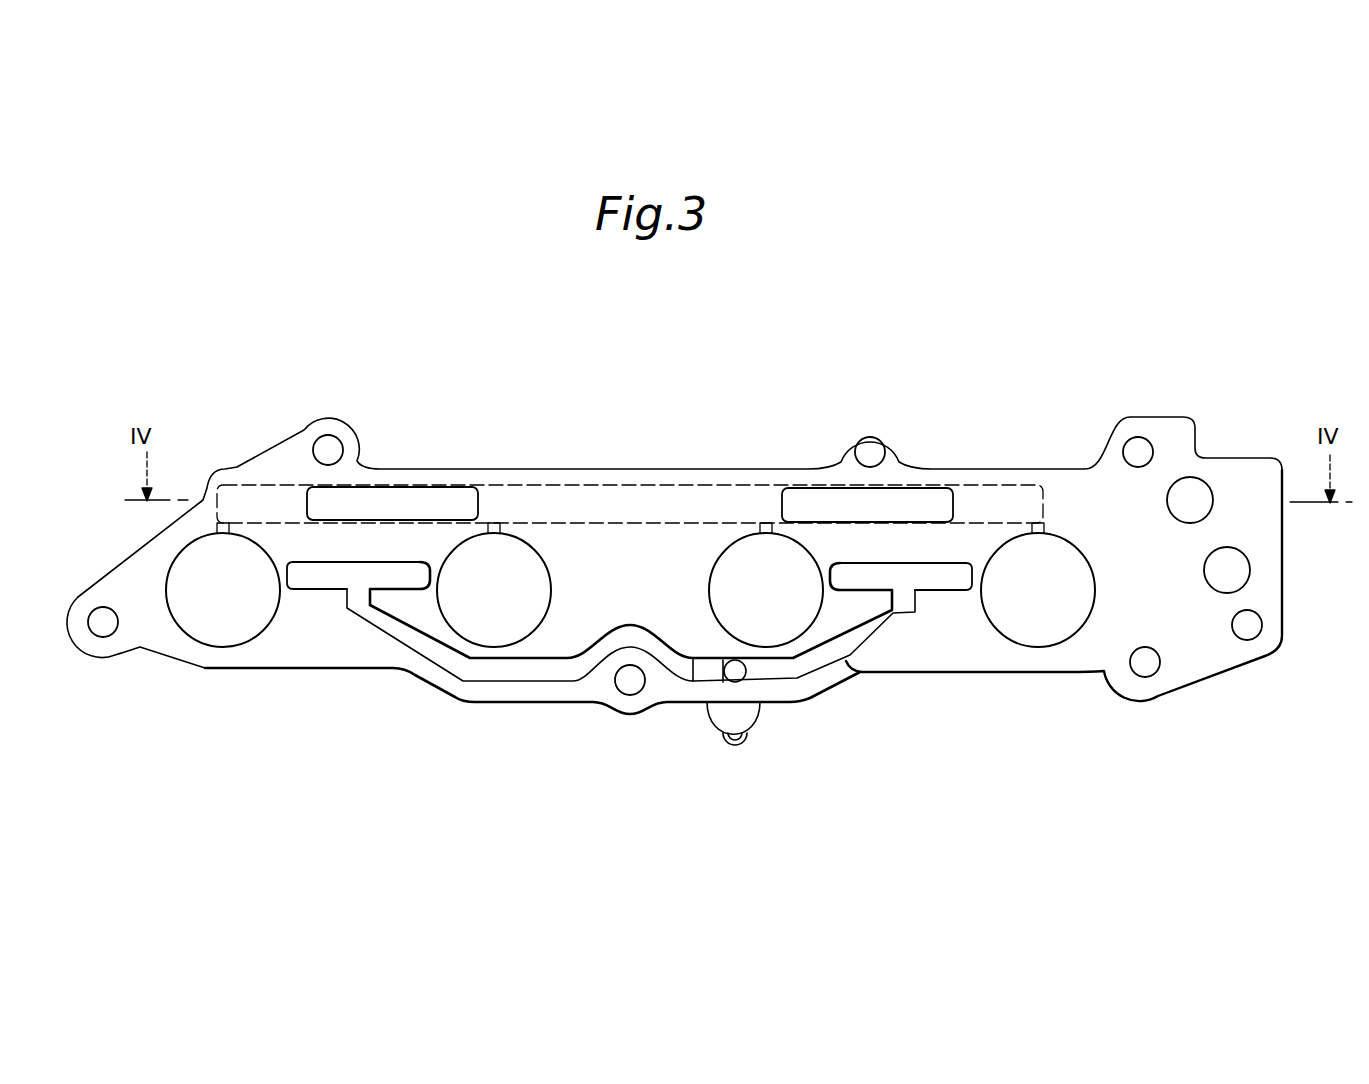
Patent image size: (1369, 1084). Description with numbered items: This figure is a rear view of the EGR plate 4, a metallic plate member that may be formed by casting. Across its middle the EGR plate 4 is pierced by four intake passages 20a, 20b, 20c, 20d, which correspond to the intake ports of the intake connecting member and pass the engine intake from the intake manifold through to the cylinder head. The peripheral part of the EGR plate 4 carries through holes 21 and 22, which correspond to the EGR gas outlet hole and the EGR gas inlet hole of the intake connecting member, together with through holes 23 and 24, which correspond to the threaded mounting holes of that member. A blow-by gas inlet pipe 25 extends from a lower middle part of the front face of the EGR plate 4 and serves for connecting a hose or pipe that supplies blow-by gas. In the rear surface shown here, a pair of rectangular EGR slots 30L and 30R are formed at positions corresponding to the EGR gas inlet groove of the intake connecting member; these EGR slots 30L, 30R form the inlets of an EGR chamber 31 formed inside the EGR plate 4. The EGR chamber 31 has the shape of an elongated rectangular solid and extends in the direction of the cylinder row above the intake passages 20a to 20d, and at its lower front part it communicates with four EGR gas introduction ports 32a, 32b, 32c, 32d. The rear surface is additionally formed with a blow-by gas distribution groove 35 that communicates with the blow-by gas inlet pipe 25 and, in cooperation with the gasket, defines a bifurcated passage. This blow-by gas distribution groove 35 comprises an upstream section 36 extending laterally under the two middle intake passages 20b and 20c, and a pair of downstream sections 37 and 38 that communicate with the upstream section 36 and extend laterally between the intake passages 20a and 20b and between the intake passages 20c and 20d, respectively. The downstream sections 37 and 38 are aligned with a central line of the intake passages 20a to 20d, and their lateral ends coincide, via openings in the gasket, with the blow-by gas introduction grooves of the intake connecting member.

The EGR plate 4 is at (1046, 341).
The intake passage 20a is at (1020, 636).
The intake passage 20b is at (808, 636).
The intake passage 20c is at (478, 636).
The intake passage 20d is at (206, 636).
The through hole 21 is at (1250, 582).
The through hole 22 is at (1186, 484).
The through hole 23 is at (320, 444).
The through hole 24 is at (1132, 446).
The blow-by gas inlet pipe 25 is at (723, 661).
The EGR slot 30R is at (404, 494).
The EGR slot 30L is at (918, 493).
The EGR chamber 31 is at (603, 487).
The EGR gas introduction port 32a is at (1044, 527).
The EGR gas introduction port 32b is at (762, 527).
The EGR gas introduction port 32c is at (500, 527).
The EGR gas introduction port 32d is at (217, 526).
The blow-by gas distribution groove 35 is at (847, 659).
The upstream section 36 is at (683, 673).
The downstream section 37 is at (957, 559).
The downstream section 38 is at (350, 556).